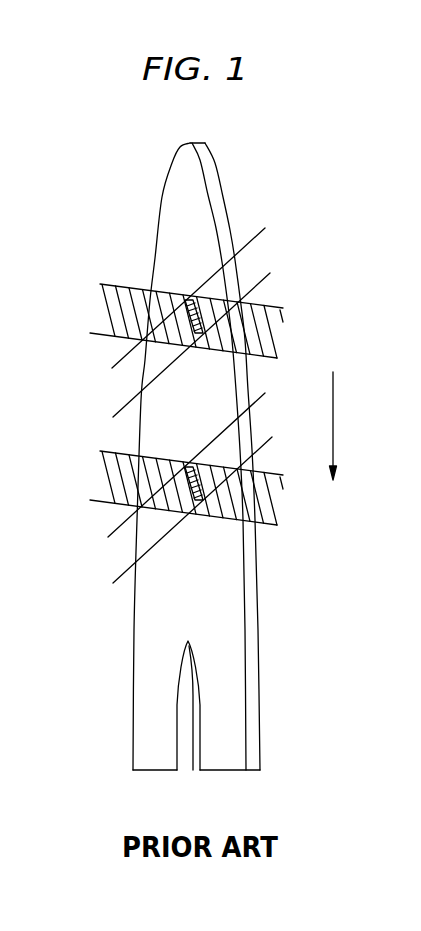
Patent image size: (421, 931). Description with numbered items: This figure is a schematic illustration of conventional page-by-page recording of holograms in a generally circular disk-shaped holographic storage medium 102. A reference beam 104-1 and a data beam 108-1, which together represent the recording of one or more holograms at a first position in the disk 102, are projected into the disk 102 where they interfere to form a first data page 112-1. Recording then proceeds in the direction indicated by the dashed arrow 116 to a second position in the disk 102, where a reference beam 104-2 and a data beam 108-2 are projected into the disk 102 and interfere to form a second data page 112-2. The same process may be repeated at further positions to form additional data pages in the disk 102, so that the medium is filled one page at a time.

The holographic storage medium 102 is at (223, 653).
The reference beam 104-1 is at (124, 384).
The reference beam 104-2 is at (124, 550).
The data beam 108-1 is at (120, 312).
The data beam 108-2 is at (120, 479).
The first data page 112-1 is at (197, 336).
The second data page 112-2 is at (192, 483).
The dashed arrow 116 is at (334, 421).